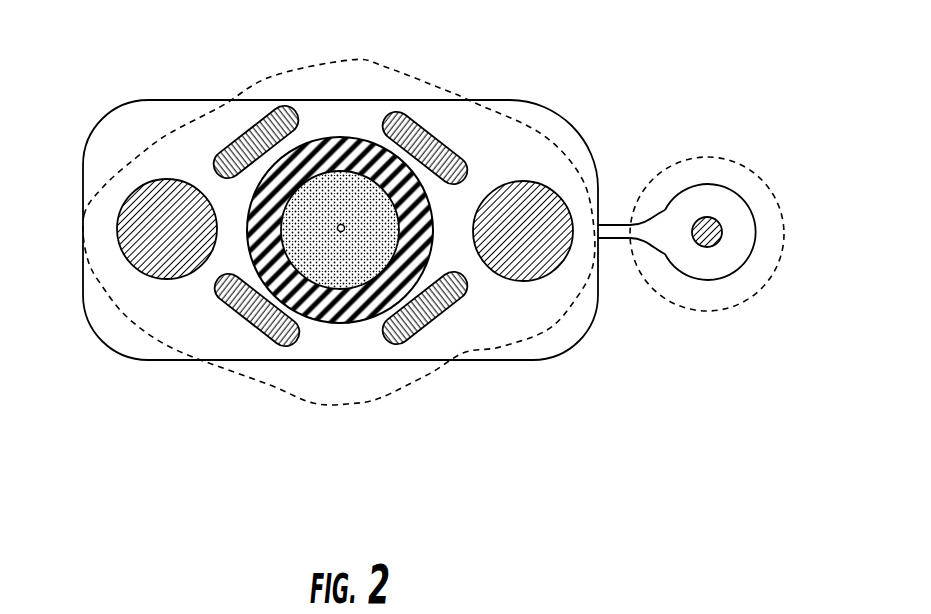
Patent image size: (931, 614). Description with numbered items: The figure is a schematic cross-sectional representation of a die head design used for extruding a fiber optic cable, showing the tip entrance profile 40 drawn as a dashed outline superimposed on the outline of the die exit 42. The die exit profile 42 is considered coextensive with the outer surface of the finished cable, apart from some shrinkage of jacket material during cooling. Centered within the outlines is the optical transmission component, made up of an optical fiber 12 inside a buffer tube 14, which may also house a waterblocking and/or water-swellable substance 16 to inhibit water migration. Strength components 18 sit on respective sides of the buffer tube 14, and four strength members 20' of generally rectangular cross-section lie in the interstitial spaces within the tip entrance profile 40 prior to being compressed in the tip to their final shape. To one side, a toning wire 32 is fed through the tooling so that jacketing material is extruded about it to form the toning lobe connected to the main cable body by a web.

The optical fiber 12 is at (341, 232).
The buffer tube 14 is at (405, 305).
The waterblocking and/or water-swellable substance 16 is at (322, 290).
The strength component 18 is at (128, 262).
The strength member 20' is at (331, 275).
The toning wire 32 is at (722, 232).
The tip entrance profile 40 is at (400, 72).
The die exit profile 42 is at (267, 100).